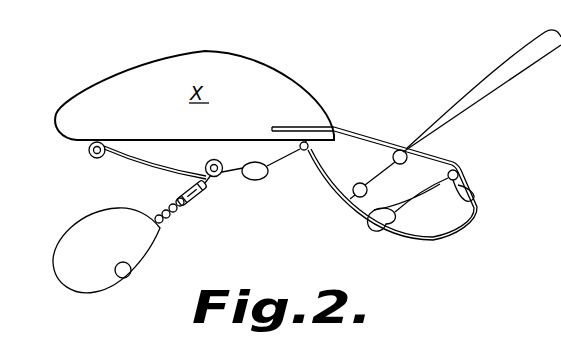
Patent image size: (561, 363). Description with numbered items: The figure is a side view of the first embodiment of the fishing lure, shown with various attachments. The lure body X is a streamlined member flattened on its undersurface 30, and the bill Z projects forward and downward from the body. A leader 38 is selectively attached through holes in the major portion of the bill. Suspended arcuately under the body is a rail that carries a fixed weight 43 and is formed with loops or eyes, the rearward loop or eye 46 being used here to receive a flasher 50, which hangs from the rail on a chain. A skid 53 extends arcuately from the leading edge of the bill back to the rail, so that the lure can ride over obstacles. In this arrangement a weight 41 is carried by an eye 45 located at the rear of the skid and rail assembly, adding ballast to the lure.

The undersurface 30 is at (162, 141).
The leader 38 is at (508, 55).
The weight 41 is at (377, 231).
The fixed weight 43 is at (262, 181).
The eye 45 is at (478, 200).
The rearward loop or eye 46 is at (88, 160).
The flasher 50 is at (110, 261).
The skid 53 is at (345, 205).